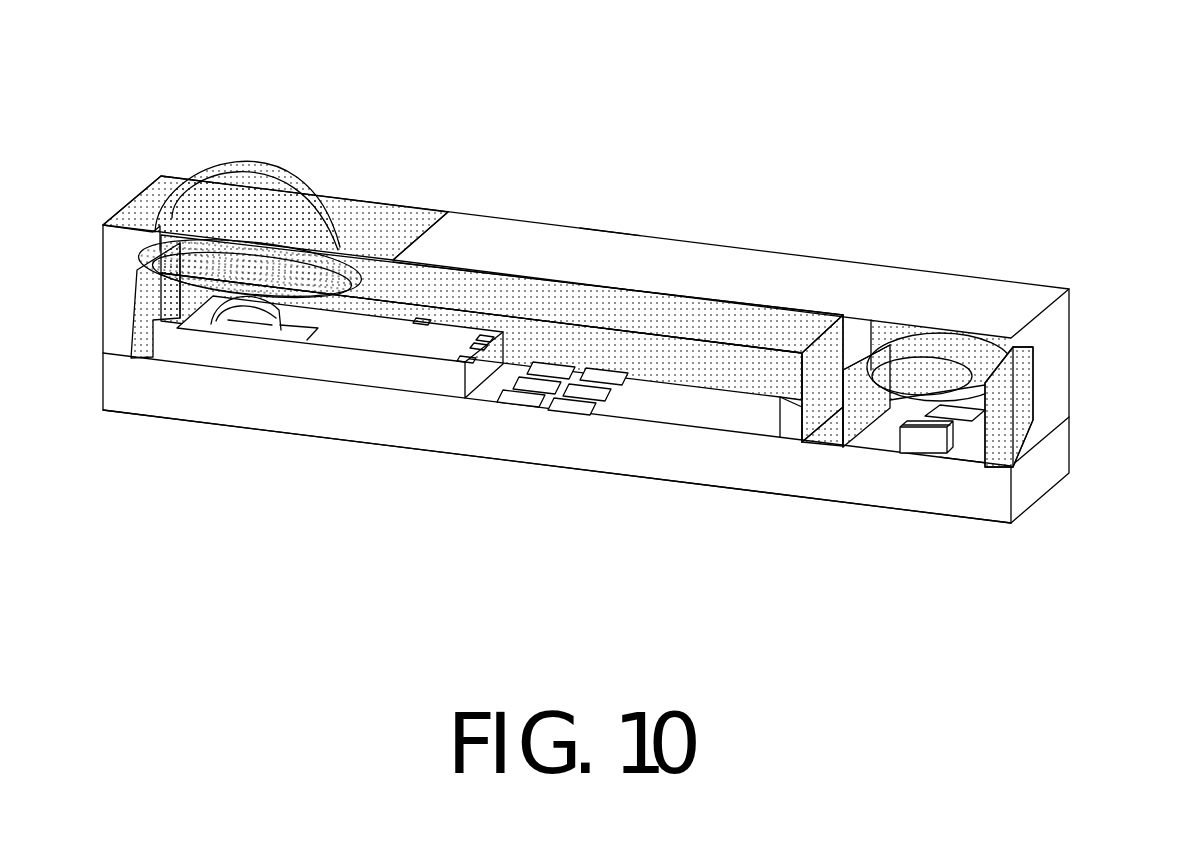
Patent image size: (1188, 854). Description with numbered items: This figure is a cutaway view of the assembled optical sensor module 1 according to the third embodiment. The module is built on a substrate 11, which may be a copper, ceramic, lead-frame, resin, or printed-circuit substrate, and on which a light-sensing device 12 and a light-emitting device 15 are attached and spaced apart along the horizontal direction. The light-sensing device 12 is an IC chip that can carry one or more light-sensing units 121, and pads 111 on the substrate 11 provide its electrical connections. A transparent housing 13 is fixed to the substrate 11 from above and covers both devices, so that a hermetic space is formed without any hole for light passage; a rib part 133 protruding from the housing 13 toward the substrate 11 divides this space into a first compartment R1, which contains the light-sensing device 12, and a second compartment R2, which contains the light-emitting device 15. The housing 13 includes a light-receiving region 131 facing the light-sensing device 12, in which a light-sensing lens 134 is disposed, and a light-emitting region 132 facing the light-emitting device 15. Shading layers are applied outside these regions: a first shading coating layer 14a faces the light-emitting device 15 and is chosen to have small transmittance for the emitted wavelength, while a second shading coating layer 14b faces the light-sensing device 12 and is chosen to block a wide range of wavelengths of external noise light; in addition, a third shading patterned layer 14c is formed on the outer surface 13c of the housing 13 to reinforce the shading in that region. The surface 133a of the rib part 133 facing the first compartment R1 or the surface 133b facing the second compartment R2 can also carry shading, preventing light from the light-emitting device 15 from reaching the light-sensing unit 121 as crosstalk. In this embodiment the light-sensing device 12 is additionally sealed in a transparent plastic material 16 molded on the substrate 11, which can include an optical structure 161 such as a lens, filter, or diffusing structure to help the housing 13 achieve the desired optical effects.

The optical sensor module 1 is at (1115, 256).
The substrate 11 is at (176, 406).
The light-sensing device 12 is at (420, 390).
The pads 111 is at (521, 397).
The light-sensing unit 121 is at (258, 332).
The housing 13 is at (524, 232).
The outer surface 13c is at (604, 240).
The light-receiving region 131 is at (272, 245).
The light-emitting region 132 is at (961, 350).
The rib part 133 is at (830, 437).
The surface of the rib part facing the first compartment 133a is at (796, 424).
The surface of the rib part facing the second compartment 133b is at (862, 420).
The light-sensing lens 134 is at (255, 163).
The first shading coating layer 14a is at (1035, 377).
The second shading coating layer 14b is at (769, 320).
The third shading patterned layer 14c is at (413, 212).
The light-emitting device 15 is at (935, 452).
The transparent plastic material 16 is at (143, 360).
The optical structure 161 is at (208, 322).
The first compartment R1 is at (666, 360).
The second compartment R2 is at (976, 446).